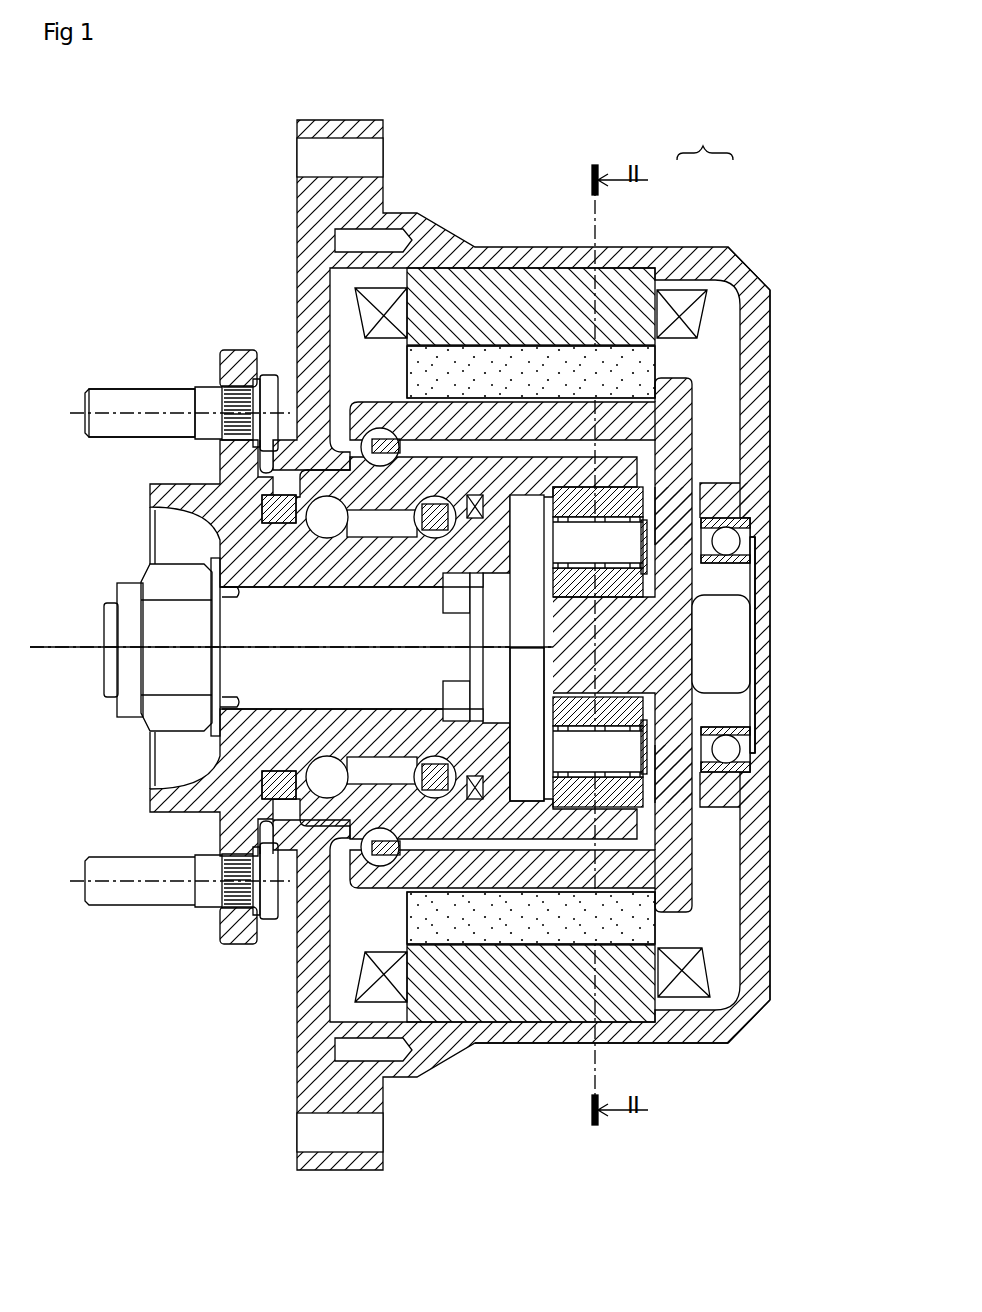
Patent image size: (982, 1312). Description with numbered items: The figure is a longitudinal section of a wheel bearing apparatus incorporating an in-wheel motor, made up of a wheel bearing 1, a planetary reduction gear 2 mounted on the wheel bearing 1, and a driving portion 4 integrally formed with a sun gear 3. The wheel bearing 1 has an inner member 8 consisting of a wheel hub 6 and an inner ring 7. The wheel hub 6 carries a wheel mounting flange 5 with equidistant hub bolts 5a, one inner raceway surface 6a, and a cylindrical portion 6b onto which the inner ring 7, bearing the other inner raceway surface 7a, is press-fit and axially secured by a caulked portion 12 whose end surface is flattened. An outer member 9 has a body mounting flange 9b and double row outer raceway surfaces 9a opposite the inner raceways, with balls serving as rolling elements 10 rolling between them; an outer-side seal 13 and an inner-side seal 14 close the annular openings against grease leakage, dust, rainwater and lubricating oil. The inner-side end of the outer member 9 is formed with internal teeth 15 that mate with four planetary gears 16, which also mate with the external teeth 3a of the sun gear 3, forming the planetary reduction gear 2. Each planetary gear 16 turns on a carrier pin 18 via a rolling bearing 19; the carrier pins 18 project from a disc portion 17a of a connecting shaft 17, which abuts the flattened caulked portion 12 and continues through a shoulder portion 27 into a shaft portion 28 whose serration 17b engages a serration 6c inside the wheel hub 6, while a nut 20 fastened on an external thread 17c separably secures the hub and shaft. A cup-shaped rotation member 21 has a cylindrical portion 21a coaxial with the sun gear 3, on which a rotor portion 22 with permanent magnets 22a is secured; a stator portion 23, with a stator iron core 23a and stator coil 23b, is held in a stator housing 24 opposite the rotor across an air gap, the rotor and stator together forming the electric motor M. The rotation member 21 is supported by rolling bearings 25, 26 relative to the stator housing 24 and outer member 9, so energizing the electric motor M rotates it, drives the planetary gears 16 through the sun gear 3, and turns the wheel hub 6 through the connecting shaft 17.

The wheel bearing 1 is at (161, 344).
The planetary reduction gear 2 is at (705, 517).
The sun gear 3 is at (693, 660).
The external teeth 3a is at (660, 712).
The driving portion 4 is at (796, 294).
The wheel mounting flange 5 is at (232, 362).
The hub bolts 5a is at (122, 402).
The wheel hub 6 is at (227, 537).
The inner raceway surface 6a is at (325, 532).
The cylindrical portion 6b is at (466, 576).
The serration 6c is at (288, 590).
The inner ring 7 is at (500, 734).
The inner raceway surface 7a is at (443, 763).
The inner member 8 is at (224, 588).
The outer member 9 is at (495, 470).
The outer raceway surfaces 9a is at (437, 500).
The body mounting flange 9b is at (298, 214).
The rolling elements 10 is at (328, 758).
The caulked portion 12 is at (497, 541).
The seal 13 is at (255, 785).
The seal 14 is at (400, 850).
The internal teeth 15 is at (622, 456).
The planetary gears 16 is at (663, 474).
The connecting shaft 17 is at (591, 558).
The disc portion 17a is at (530, 621).
The serration 17b is at (368, 576).
The external thread 17c is at (110, 602).
The carrier pin 18 is at (678, 528).
The rolling bearing 19 is at (715, 812).
The nut 20 is at (160, 681).
The rotation member 21 is at (736, 589).
The cylindrical portion 21a is at (508, 880).
The rotor portion 22 is at (648, 354).
The permanent magnets 22a is at (500, 356).
The stator portion 23 is at (628, 290).
The stator iron core 23a is at (684, 302).
The stator coil 23b is at (558, 290).
The stator housing 24 is at (748, 266).
The rolling bearing 25 is at (730, 749).
The rolling bearing 26 is at (372, 440).
The shoulder portion 27 is at (492, 668).
The shaft portion 28 is at (298, 694).
The electric motor M is at (705, 143).